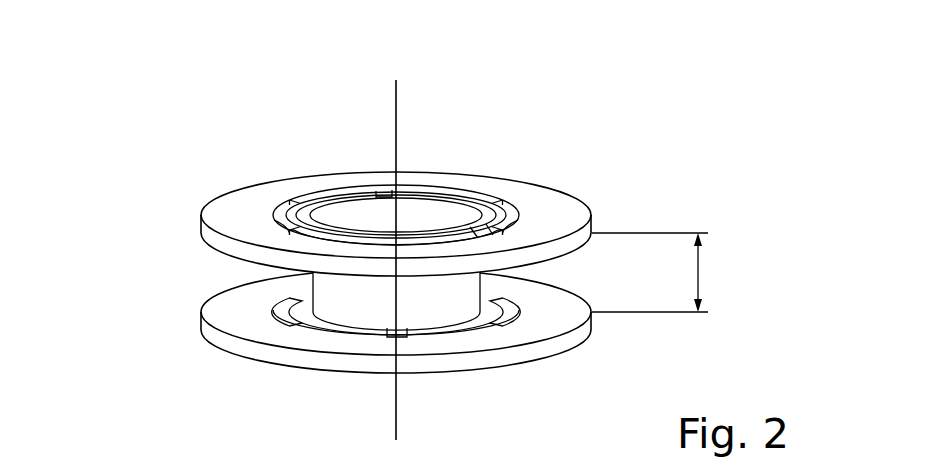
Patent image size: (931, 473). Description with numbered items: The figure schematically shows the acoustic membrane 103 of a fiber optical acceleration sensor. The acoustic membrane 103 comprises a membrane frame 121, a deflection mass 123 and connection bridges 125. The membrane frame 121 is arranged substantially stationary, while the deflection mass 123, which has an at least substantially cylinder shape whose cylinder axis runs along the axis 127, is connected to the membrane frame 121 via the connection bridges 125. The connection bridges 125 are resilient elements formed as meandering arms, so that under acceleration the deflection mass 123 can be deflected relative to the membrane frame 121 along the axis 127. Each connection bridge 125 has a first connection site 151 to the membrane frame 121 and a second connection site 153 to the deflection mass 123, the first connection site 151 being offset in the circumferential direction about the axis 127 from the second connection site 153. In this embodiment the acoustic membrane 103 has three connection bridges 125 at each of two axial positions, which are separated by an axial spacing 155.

The acoustic membrane 103 is at (186, 104).
The membrane frame 121 is at (201, 219).
The deflection mass 123 is at (313, 192).
The connection bridges 125 is at (276, 214).
The axis 127 is at (394, 137).
The first connection site 151 is at (408, 190).
The second connection site 153 is at (485, 222).
The axial spacing 155 is at (699, 275).